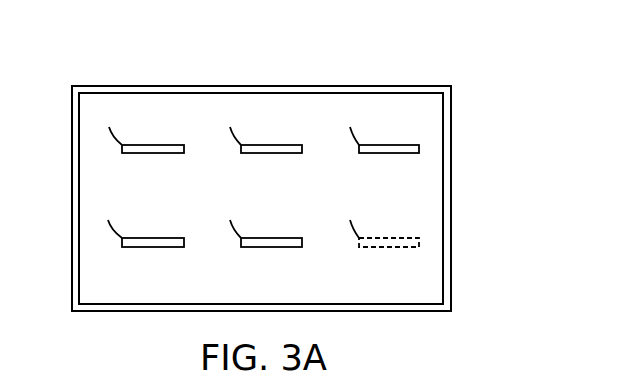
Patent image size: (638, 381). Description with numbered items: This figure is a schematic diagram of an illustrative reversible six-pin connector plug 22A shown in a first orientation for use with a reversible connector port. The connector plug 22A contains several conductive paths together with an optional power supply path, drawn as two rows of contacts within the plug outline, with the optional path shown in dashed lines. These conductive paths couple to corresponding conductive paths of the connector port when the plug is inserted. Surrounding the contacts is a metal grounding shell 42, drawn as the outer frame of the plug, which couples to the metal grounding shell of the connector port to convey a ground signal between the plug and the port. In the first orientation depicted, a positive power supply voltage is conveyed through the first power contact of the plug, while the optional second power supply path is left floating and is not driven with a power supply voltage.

The 6-pin connector plug 22A is at (302, 158).
The metal grounding shell 42 is at (72, 86).